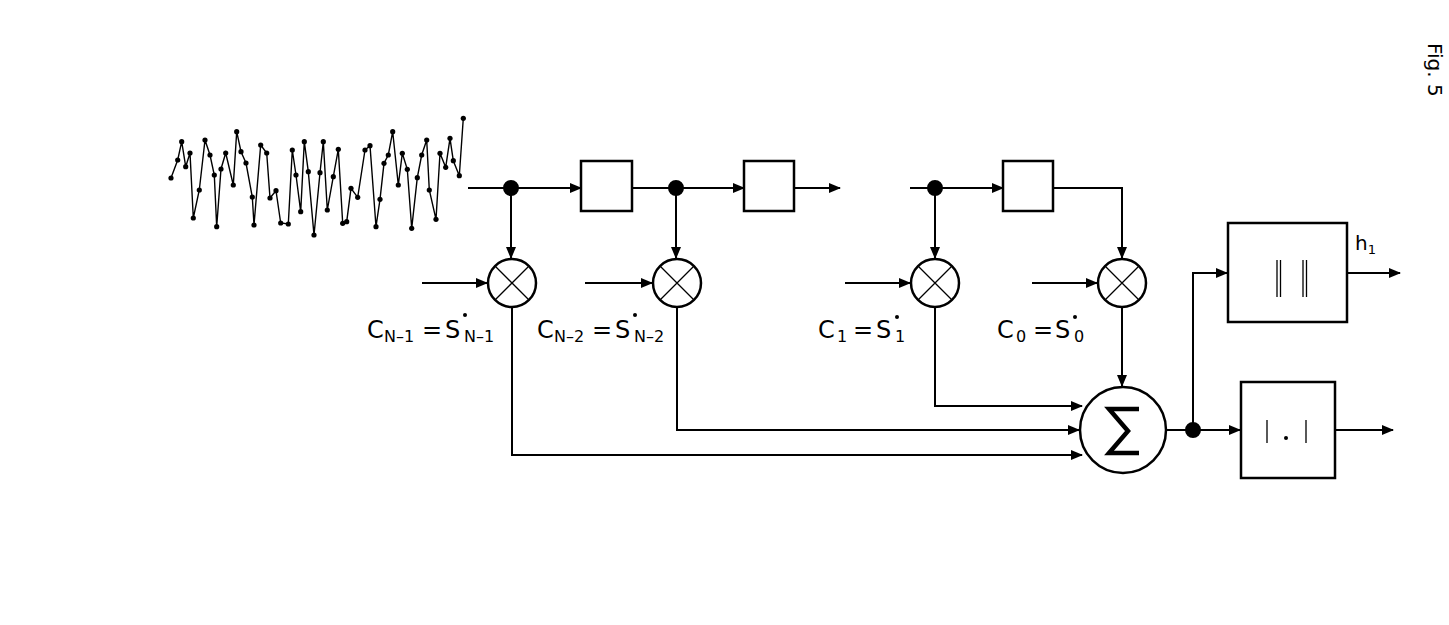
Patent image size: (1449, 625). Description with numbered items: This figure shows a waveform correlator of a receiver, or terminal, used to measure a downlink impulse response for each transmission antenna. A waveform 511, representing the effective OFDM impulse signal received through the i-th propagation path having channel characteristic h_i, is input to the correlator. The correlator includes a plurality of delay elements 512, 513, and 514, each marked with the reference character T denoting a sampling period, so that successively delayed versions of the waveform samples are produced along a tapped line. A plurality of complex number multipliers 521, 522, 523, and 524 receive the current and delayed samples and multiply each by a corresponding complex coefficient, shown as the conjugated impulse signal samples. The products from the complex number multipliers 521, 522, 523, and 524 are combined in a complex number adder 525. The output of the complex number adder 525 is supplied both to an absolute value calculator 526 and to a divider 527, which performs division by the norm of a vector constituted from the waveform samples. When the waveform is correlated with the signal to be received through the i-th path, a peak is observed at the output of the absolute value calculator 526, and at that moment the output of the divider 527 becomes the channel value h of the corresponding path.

The waveform 511 is at (177, 160).
The delay element 512 is at (605, 161).
The delay element 513 is at (768, 161).
The delay element 514 is at (1022, 161).
The complex number multiplier 521 is at (493, 267).
The complex number multiplier 522 is at (658, 267).
The complex number multiplier 523 is at (916, 267).
The complex number multiplier 524 is at (1103, 267).
The complex number adder 525 is at (1123, 474).
The absolute value calculator 526 is at (1290, 479).
The divider 527 is at (1290, 222).